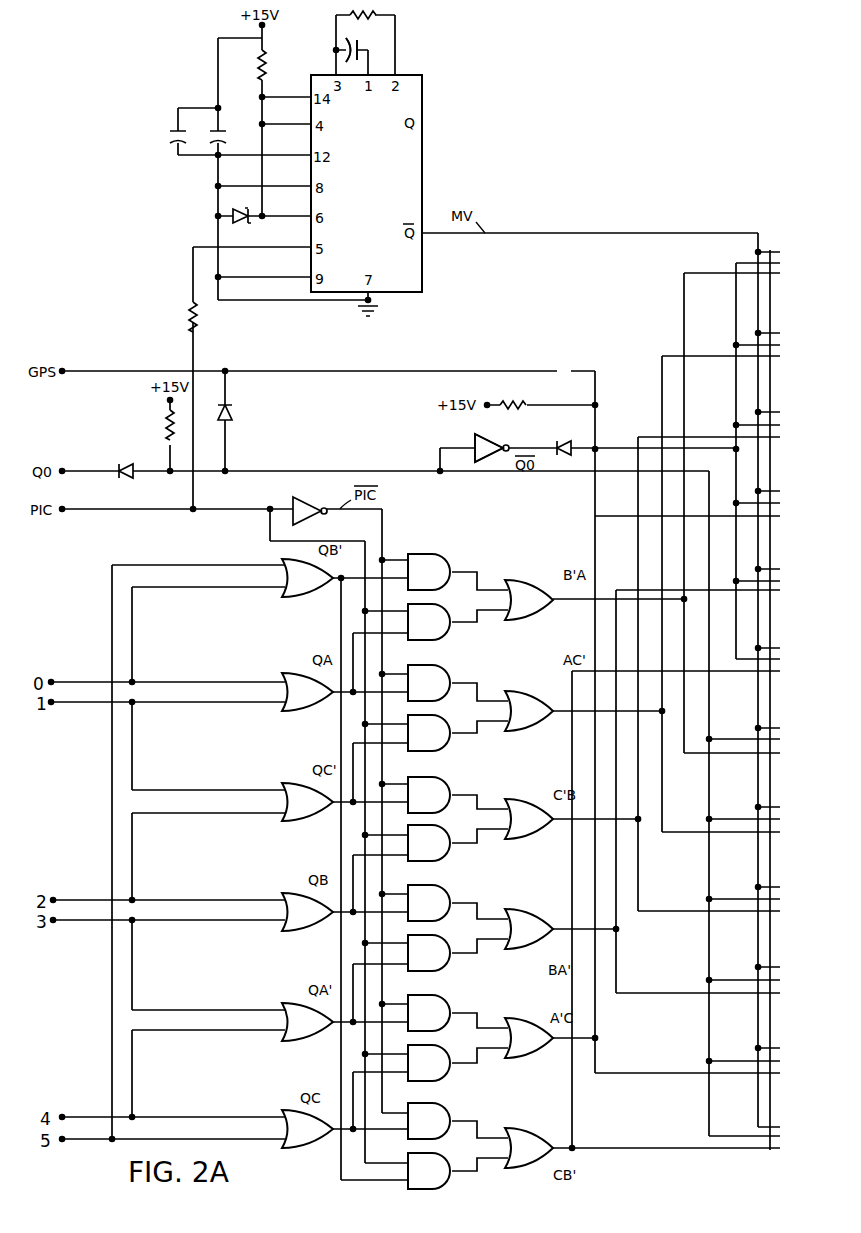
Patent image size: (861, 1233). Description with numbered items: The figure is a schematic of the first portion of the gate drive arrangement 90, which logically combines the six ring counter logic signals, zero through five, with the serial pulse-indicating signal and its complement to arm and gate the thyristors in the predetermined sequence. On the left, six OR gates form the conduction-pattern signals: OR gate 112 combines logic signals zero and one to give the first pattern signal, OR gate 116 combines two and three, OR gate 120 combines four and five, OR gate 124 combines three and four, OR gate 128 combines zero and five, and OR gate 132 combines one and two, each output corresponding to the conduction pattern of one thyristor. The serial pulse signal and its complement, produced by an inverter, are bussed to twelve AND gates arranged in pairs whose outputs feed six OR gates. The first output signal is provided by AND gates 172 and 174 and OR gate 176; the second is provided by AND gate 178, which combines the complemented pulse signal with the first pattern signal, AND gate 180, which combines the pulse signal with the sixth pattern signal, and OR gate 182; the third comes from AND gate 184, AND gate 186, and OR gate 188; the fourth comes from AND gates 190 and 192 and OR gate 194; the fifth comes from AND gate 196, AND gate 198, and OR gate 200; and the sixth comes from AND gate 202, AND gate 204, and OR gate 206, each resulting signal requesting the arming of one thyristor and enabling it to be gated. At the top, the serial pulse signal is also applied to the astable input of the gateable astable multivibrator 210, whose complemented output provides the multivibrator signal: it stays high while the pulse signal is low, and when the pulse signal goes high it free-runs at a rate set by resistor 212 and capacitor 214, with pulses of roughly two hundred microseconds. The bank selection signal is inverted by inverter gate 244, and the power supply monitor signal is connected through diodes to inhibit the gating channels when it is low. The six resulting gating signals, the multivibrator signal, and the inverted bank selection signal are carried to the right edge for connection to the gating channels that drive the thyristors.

The gate drivers 90 is at (752, 182).
The OR gate 112 is at (298, 712).
The OR gate 116 is at (303, 932).
The OR gate 120 is at (304, 1149).
The OR gate 124 is at (302, 1042).
The OR gate 128 is at (300, 598).
The OR gate 132 is at (305, 822).
The AND gate 172 is at (424, 553).
The AND gate 174 is at (440, 634).
The OR gate 176 is at (520, 580).
The AND gate 178 is at (442, 667).
The AND gate 180 is at (442, 750).
The OR gate 182 is at (518, 691).
The AND gate 184 is at (452, 782).
The AND gate 186 is at (444, 860).
The OR gate 188 is at (518, 799).
The AND gate 190 is at (444, 887).
The AND gate 192 is at (444, 962).
The OR gate 194 is at (520, 909).
The AND gate 196 is at (444, 1000).
The AND gate 198 is at (444, 1072).
The OR gate 200 is at (522, 1059).
The AND gate 202 is at (446, 1108).
The AND gate 204 is at (444, 1188).
The OR gate 206 is at (518, 1128).
The gateable astable multivibrator 210 is at (443, 136).
The resistor 212 is at (380, 15).
The capacitor 214 is at (345, 24).
The inverter gate 244 is at (475, 440).